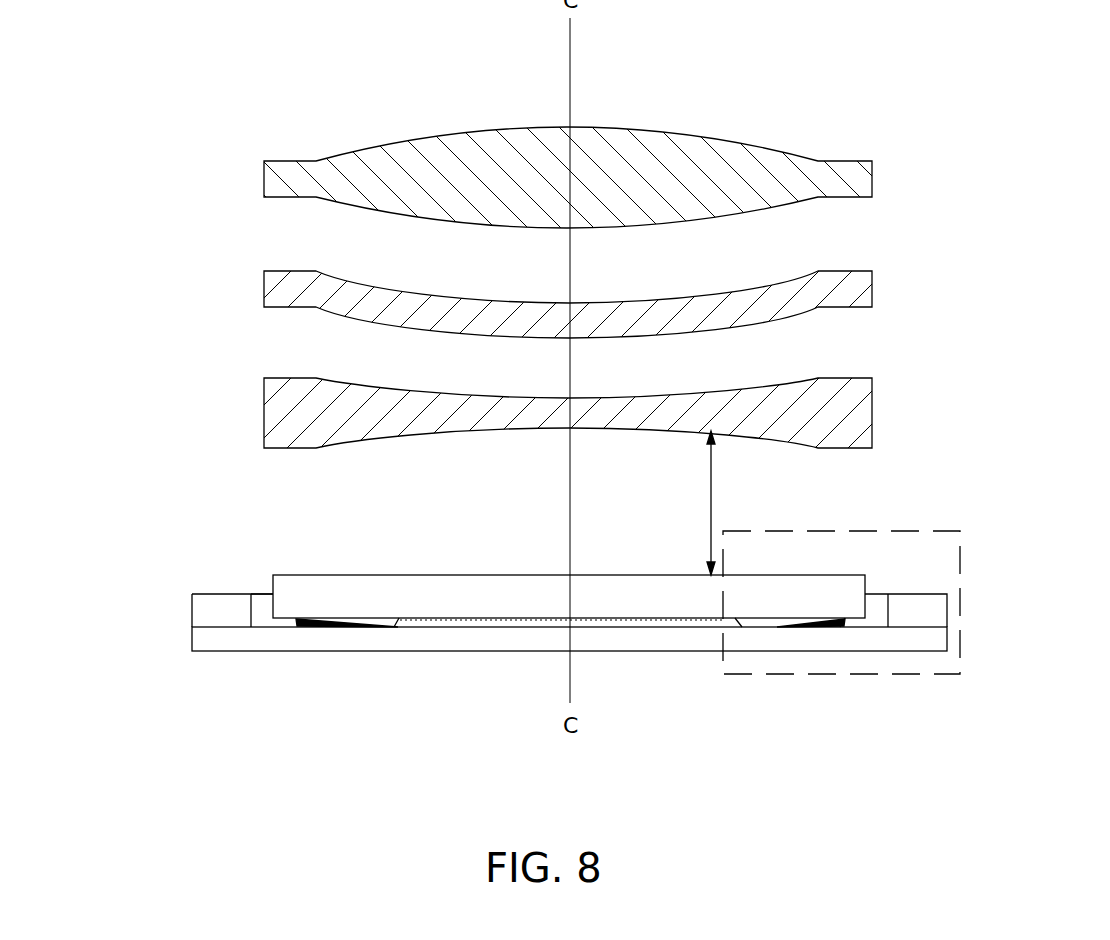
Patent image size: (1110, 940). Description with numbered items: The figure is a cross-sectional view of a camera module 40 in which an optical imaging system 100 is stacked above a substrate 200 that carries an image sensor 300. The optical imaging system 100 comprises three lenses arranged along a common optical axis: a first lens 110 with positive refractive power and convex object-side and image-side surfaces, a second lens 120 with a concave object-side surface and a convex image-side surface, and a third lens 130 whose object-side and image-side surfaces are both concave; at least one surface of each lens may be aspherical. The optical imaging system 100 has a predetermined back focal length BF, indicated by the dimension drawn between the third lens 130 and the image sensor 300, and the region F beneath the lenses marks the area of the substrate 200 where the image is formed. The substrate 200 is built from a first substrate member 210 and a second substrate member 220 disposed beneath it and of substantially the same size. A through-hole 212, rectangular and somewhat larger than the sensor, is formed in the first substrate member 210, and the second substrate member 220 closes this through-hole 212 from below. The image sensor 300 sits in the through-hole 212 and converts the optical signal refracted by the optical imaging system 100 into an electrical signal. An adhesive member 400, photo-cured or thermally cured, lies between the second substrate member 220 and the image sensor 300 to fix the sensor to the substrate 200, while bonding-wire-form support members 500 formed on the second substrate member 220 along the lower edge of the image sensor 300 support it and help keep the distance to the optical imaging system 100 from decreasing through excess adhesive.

The camera module 40 is at (890, 137).
The optical imaging system 100 is at (184, 163).
The first lens 110 is at (270, 177).
The second lens 120 is at (270, 290).
The third lens 130 is at (270, 402).
The substrate 200 is at (115, 581).
The first substrate member 210 is at (192, 598).
The through-hole 212 is at (267, 604).
The second substrate member 220 is at (192, 641).
The image sensor 300 is at (368, 590).
The adhesive member 400 is at (470, 622).
The support members 500 is at (297, 619).
The back focal length BF is at (694, 503).
The focal region F is at (937, 531).